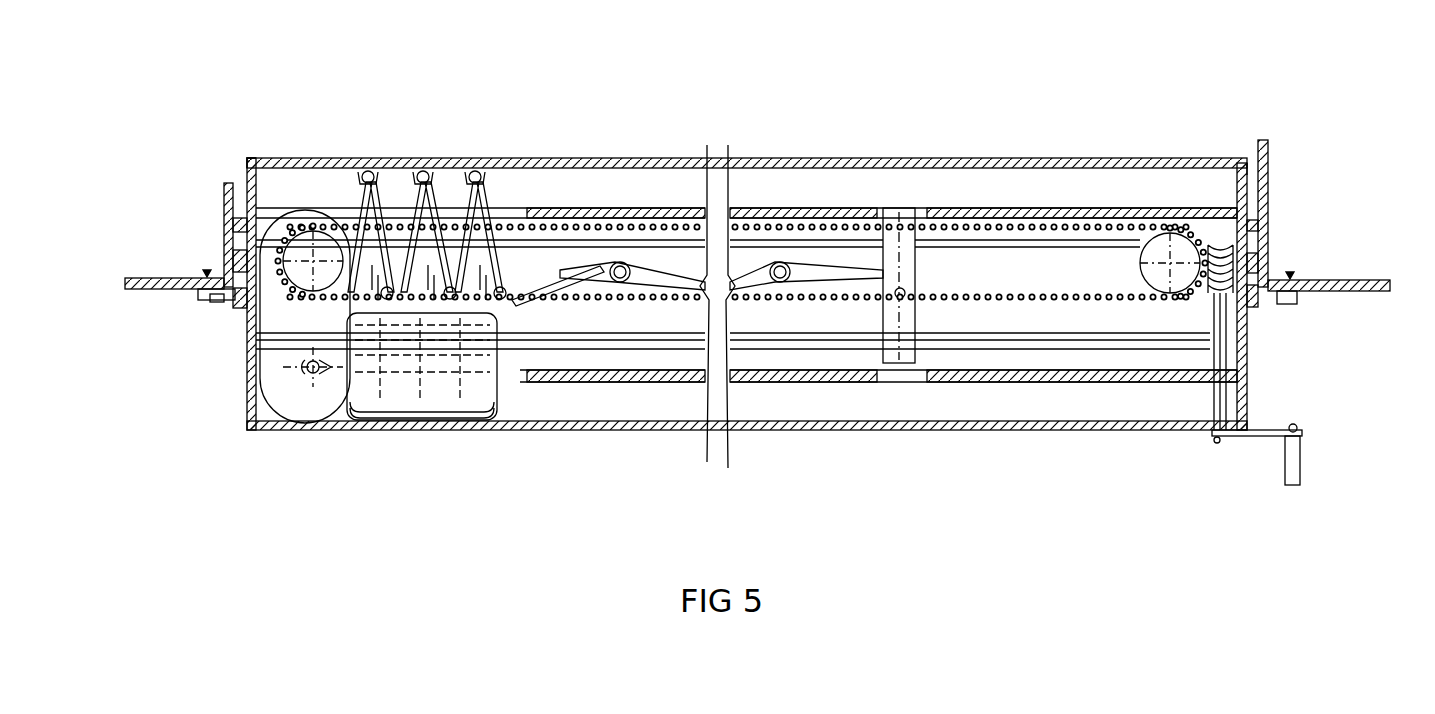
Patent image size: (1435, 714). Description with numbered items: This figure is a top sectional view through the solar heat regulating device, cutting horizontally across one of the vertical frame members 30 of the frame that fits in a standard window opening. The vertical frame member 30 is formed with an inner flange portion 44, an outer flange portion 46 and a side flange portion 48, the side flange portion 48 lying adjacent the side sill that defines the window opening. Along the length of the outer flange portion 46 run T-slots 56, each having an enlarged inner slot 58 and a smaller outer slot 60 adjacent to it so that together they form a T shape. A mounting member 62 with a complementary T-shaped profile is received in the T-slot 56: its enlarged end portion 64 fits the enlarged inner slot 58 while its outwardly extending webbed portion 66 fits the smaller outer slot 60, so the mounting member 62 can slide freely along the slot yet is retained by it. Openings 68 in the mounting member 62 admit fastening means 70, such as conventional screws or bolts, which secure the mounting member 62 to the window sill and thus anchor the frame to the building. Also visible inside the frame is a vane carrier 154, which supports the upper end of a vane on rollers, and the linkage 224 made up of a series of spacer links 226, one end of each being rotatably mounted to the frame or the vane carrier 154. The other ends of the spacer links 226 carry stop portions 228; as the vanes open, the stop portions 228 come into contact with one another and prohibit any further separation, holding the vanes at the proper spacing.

The vertical frame member 30 is at (247, 173).
The inner flange portion 44 is at (303, 422).
The outer flange portion 46 is at (305, 158).
The side flange portion 48 is at (250, 380).
The T-slot 56 is at (228, 232).
The enlarged inner slot 58 is at (1262, 230).
The smaller outer slot 60 is at (1262, 250).
The mounting member 62 is at (218, 293).
The enlarged end portion 64 is at (1253, 317).
The webbed portion 66 is at (235, 295).
The opening 68 is at (207, 293).
The fastening means 70 is at (215, 298).
The vane carrier 154 is at (905, 208).
The linkage 224 is at (498, 190).
The spacer link 226 is at (390, 290).
The stop portion 228 is at (383, 290).